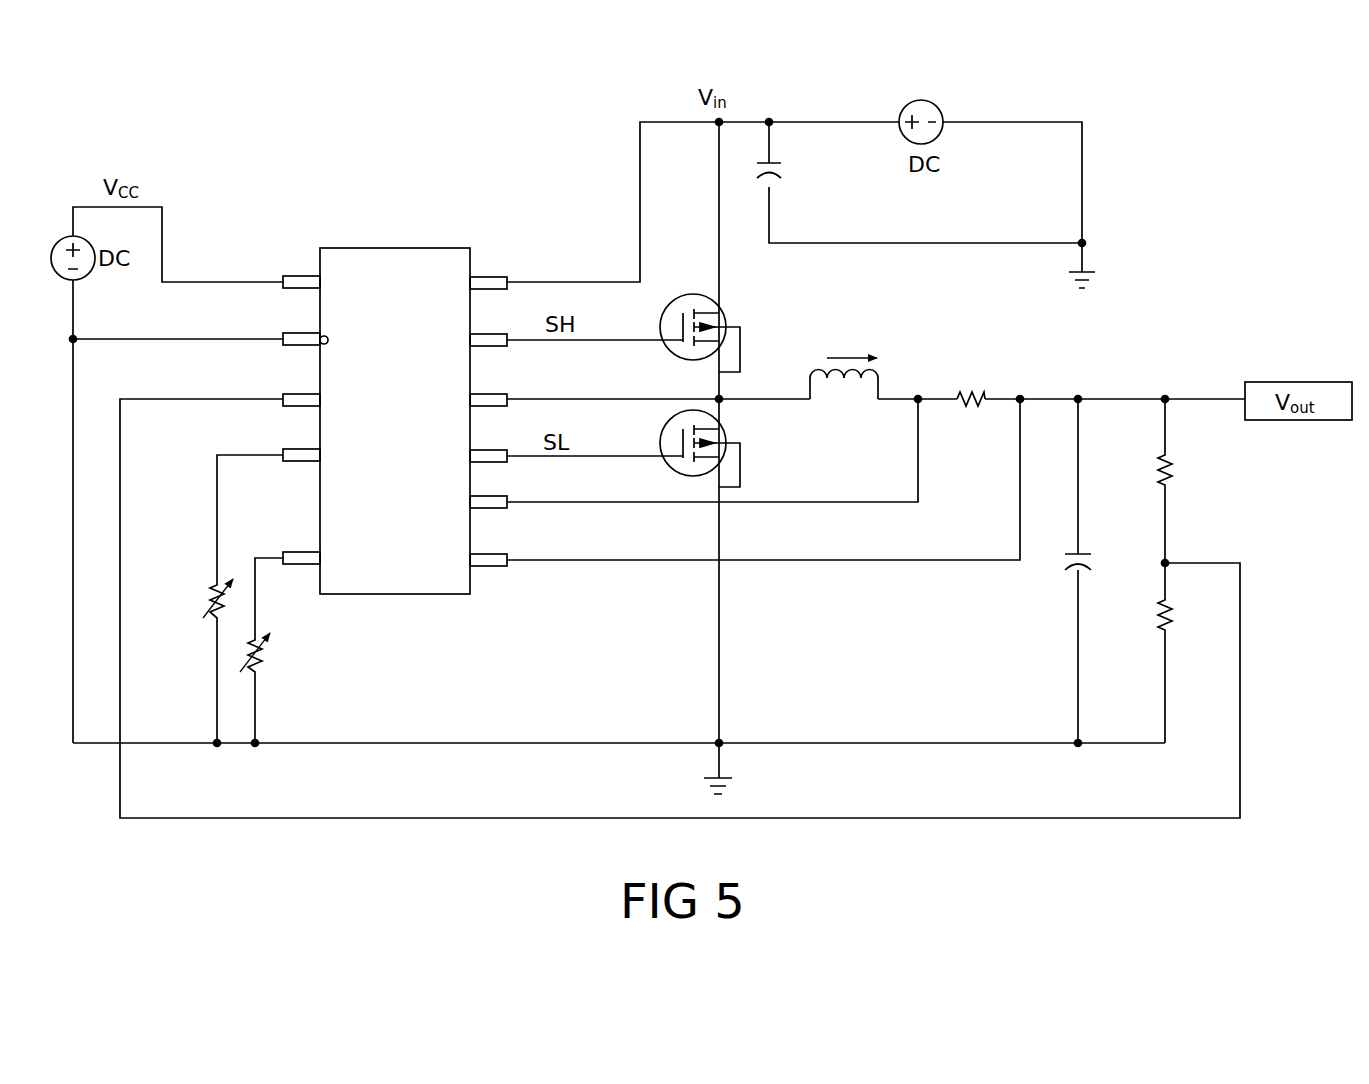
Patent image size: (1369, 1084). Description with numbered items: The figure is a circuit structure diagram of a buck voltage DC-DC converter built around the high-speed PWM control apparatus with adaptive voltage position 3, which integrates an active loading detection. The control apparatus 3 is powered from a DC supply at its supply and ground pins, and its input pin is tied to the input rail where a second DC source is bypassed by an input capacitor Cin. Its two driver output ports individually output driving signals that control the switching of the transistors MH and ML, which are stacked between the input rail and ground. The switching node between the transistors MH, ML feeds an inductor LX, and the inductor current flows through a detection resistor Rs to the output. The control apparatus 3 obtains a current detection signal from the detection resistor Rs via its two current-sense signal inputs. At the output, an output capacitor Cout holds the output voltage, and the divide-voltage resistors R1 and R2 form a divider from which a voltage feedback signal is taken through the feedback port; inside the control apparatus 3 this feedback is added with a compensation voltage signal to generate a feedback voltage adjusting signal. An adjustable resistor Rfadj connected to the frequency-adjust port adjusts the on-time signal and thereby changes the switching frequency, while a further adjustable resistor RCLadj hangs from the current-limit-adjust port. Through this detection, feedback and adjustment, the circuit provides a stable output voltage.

The high-speed PWM control apparatus with adaptive voltage position 3 is at (396, 248).
The transistor MH is at (718, 300).
The transistor ML is at (718, 418).
The inductor LX is at (844, 376).
The detection resistor Rs is at (971, 385).
The output divide-voltage resistor R1 is at (1180, 481).
The output divide-voltage resistor R2 is at (1180, 653).
The input capacitor Cin is at (788, 176).
The output capacitor Cout is at (1100, 571).
The adjustable resistor Rfadj is at (210, 599).
The adjustable resistor RCLadj is at (285, 650).